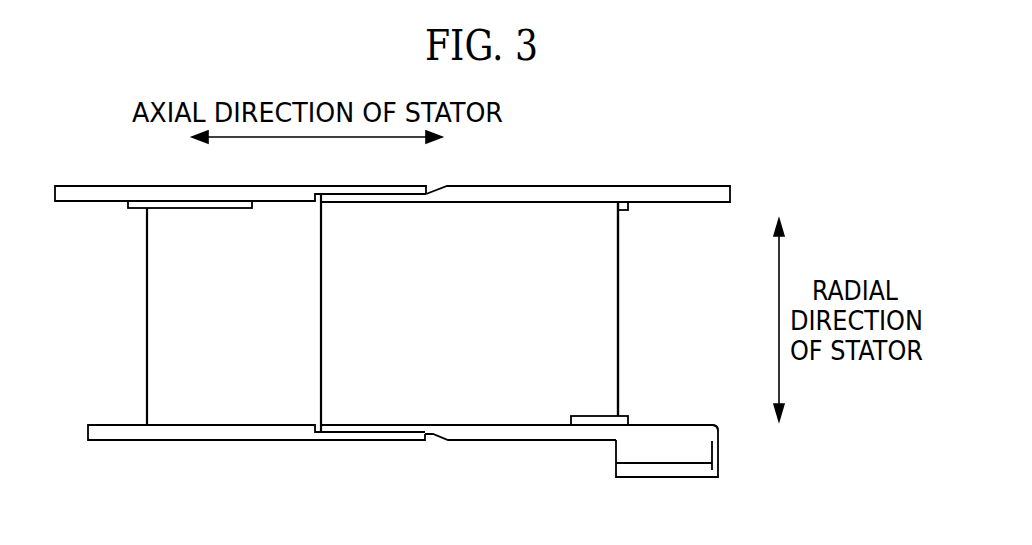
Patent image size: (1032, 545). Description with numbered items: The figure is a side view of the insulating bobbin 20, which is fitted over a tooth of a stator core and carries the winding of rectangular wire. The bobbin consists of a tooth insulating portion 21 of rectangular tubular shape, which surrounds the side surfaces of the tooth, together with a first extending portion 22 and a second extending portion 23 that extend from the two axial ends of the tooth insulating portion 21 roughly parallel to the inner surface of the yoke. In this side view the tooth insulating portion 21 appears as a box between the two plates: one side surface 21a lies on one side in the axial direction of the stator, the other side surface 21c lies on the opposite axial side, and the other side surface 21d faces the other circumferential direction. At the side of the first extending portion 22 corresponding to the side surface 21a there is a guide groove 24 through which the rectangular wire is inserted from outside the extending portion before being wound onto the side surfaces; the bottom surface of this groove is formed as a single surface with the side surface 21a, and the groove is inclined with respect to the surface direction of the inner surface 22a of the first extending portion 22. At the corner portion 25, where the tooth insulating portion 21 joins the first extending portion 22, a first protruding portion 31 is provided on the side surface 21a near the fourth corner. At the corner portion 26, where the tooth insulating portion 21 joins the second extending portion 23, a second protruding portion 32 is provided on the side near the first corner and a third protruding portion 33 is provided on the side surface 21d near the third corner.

The insulating bobbin 20 is at (618, 180).
The tooth insulating portion 21 is at (619, 345).
The one side surface 21a is at (619, 300).
The other side surface 21c is at (147, 337).
The other side surface 21d is at (372, 388).
The first extending portion 22 is at (232, 441).
The inner surface 22a is at (680, 425).
The second extending portion 23 is at (285, 185).
The guide groove 24 is at (665, 452).
The corner portion 25 is at (477, 425).
The corner portion 26 is at (537, 203).
The first protruding portion 31 is at (583, 422).
The second protruding portion 32 is at (628, 207).
The third protruding portion 33 is at (128, 205).